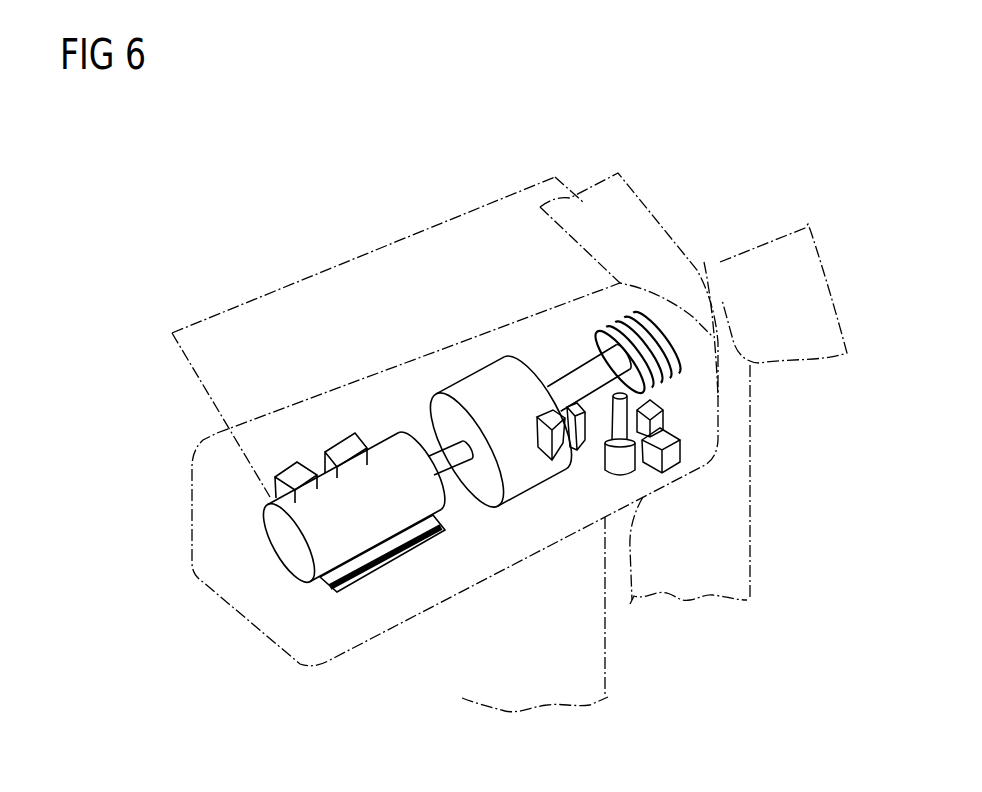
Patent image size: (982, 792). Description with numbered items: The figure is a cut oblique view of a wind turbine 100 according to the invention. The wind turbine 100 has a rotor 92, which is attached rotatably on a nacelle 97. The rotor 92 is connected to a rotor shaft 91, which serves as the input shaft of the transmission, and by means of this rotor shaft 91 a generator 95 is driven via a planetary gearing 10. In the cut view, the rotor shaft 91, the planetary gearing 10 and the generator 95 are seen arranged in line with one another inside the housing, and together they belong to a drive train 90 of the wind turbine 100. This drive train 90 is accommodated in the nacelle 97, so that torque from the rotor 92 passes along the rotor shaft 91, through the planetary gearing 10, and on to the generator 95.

The wind turbine 100 is at (190, 234).
The drive train 90 is at (376, 248).
The nacelle 97 is at (315, 393).
The rotor 92 is at (748, 533).
The generator 95 is at (283, 540).
The planetary gearing 10 is at (477, 380).
The rotor shaft 91 is at (580, 362).